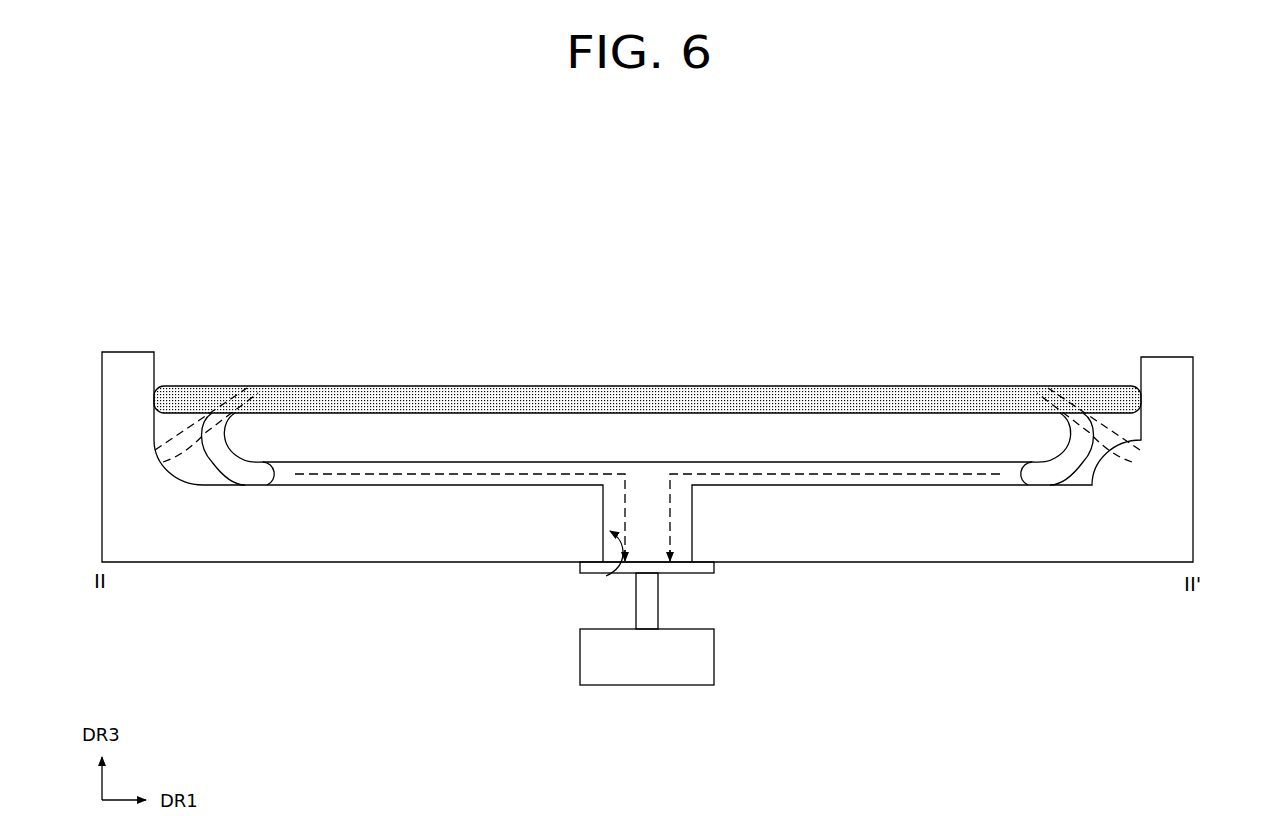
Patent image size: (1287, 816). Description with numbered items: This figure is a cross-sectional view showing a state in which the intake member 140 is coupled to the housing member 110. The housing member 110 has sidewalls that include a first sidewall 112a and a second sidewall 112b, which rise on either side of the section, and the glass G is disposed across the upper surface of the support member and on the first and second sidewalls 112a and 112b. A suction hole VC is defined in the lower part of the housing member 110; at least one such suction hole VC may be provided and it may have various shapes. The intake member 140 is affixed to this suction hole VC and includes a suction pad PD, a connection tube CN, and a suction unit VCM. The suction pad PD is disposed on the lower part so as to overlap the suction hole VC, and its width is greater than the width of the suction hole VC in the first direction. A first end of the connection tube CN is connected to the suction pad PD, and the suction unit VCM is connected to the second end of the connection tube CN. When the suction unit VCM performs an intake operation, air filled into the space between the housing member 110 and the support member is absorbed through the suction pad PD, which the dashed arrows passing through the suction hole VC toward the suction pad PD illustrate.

The housing member 110 is at (1207, 458).
The glass G is at (552, 398).
The first sidewall 112a is at (167, 472).
The second sidewall 112b is at (1128, 472).
The suction hole VC is at (606, 576).
The suction pad PD is at (693, 567).
The connection tube CN is at (650, 608).
The suction unit VCM is at (694, 657).
The intake member 140 is at (722, 623).